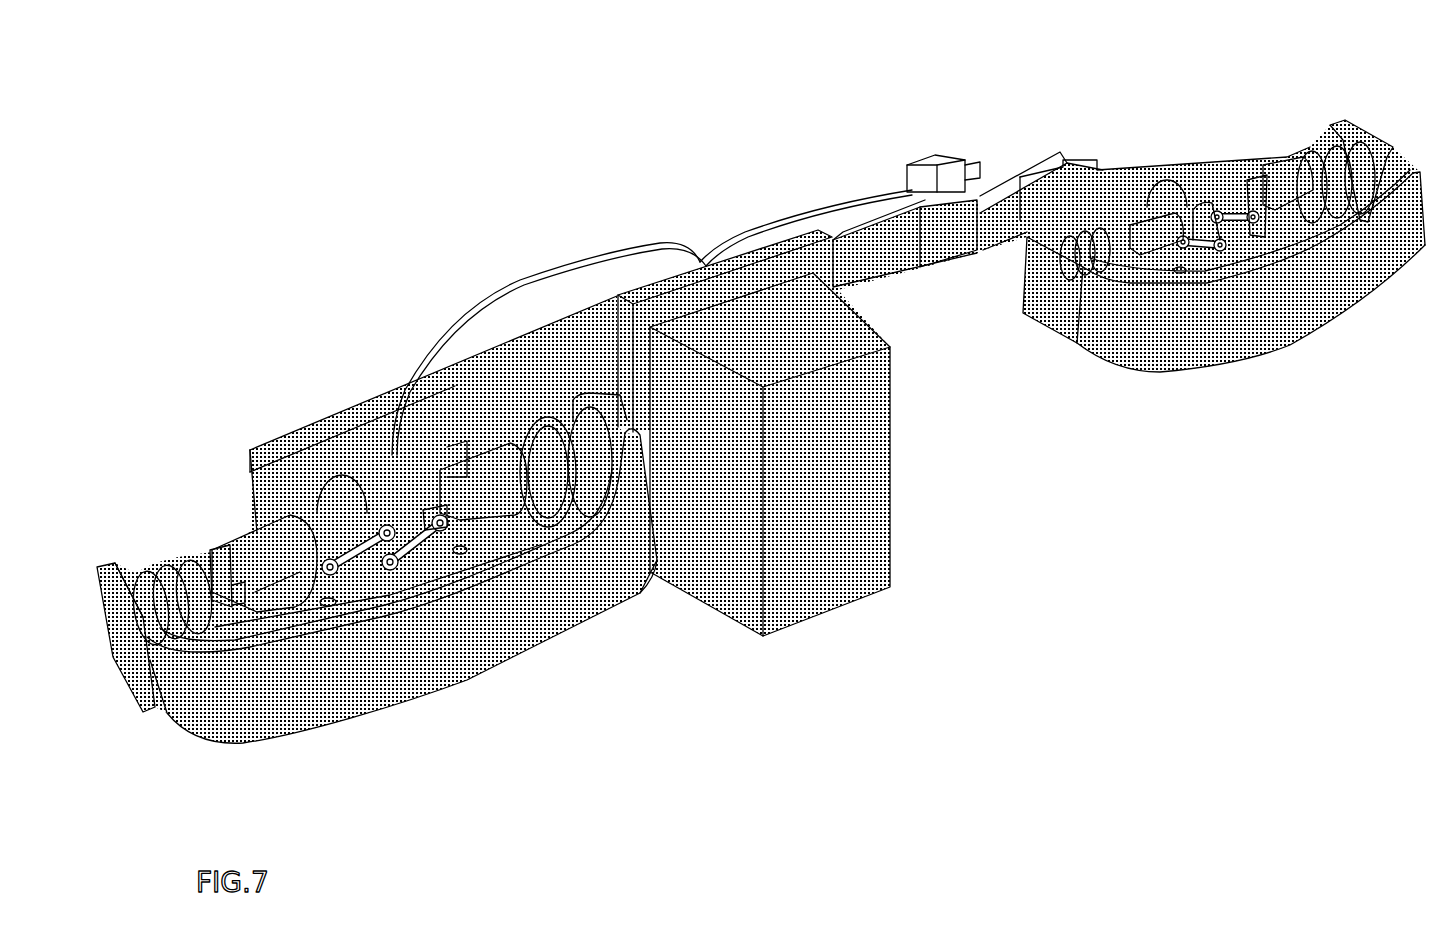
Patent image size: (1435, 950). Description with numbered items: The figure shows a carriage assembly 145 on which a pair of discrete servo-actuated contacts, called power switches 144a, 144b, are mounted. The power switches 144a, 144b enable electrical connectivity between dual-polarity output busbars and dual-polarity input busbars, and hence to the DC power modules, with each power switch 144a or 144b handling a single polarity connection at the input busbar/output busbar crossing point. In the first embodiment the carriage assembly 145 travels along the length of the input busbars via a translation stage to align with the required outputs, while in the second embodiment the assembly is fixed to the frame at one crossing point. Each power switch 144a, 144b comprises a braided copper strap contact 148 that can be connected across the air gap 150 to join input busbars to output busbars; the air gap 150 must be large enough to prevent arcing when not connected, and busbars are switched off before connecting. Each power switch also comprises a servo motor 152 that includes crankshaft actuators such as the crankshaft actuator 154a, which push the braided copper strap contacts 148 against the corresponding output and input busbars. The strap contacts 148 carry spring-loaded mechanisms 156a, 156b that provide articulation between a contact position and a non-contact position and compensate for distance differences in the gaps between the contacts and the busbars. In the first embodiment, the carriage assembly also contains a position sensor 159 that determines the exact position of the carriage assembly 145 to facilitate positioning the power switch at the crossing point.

The power switch 144a is at (503, 707).
The power switch 144b is at (1340, 360).
The carriage assembly 145 is at (614, 187).
The braided copper strap contact 148 is at (437, 668).
The air gap 150 is at (133, 577).
The servo motor 152 is at (1167, 177).
The crankshaft actuator 154a is at (1143, 180).
The spring-loaded mechanism 156a is at (247, 527).
The spring-loaded mechanism 156b is at (487, 440).
The position sensor 159 is at (920, 162).